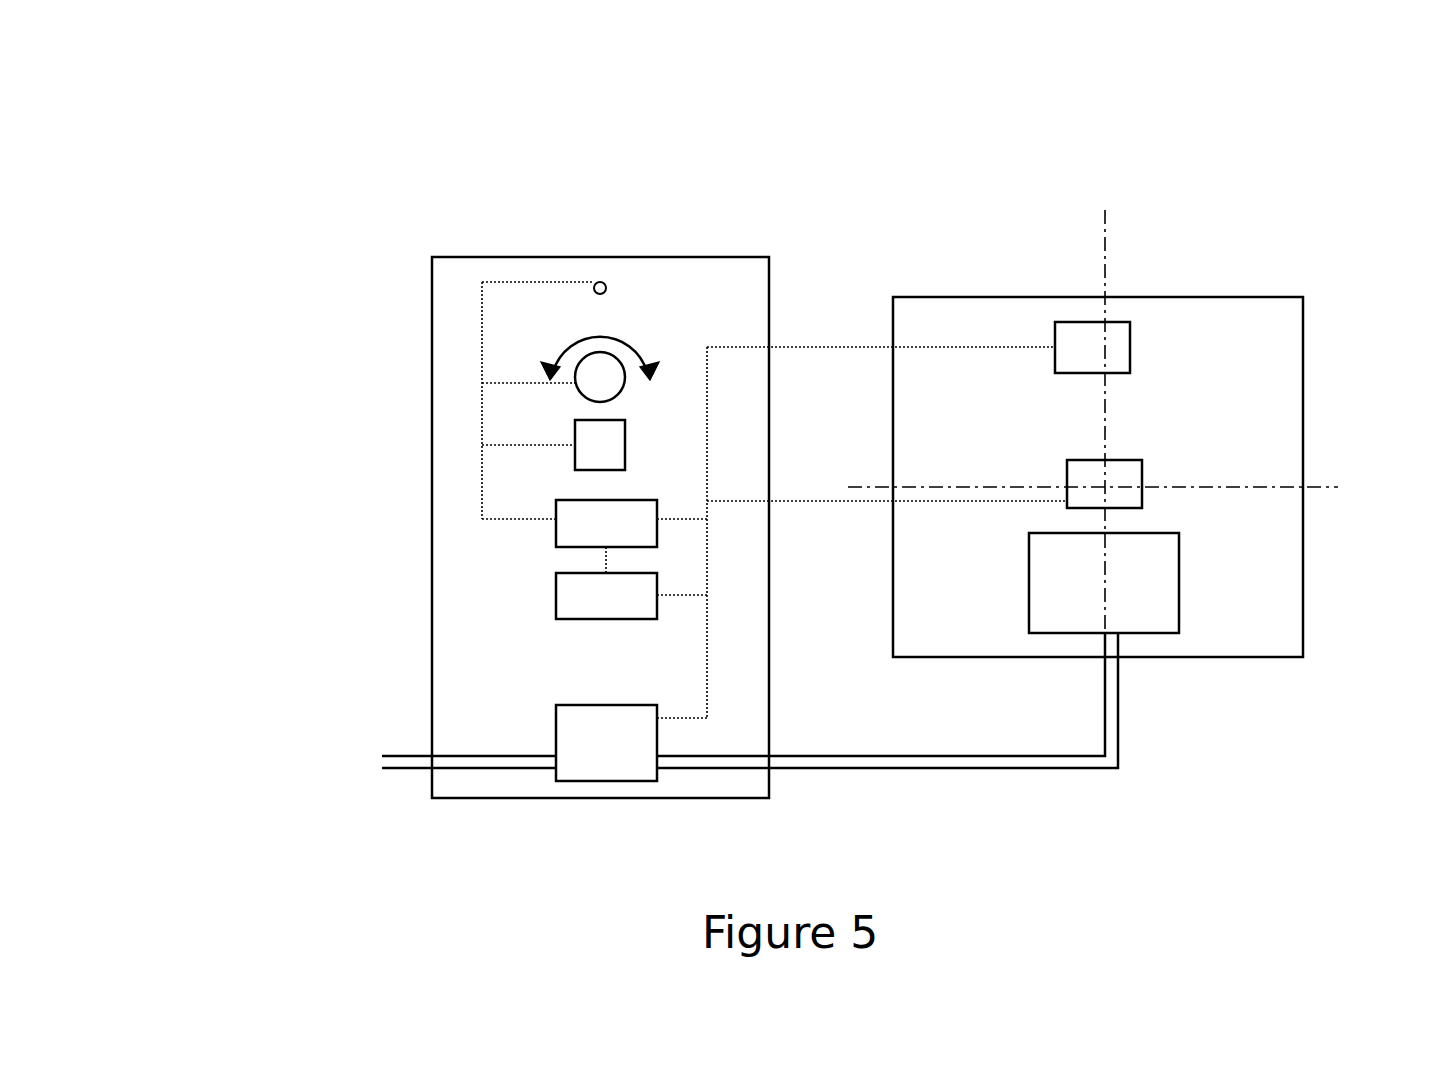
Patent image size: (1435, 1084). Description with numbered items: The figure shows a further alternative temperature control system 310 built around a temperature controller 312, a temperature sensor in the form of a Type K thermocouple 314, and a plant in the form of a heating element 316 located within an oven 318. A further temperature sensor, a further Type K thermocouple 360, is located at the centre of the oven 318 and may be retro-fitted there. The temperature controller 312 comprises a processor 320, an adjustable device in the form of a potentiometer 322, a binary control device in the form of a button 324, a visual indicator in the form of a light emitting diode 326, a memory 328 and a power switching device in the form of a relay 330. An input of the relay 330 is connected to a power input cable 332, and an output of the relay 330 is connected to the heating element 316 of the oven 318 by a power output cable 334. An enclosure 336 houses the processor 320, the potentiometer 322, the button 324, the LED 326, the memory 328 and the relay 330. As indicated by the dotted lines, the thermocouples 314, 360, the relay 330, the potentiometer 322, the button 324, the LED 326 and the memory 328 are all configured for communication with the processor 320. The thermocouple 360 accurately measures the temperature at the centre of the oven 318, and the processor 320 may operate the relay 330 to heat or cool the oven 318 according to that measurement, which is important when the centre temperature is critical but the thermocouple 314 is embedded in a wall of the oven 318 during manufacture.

The temperature control system 310 is at (872, 142).
The temperature controller 312 is at (232, 757).
The Type K thermocouple 314 is at (1118, 335).
The heating element 316 is at (1152, 618).
The oven 318 is at (1303, 333).
The processor 320 is at (578, 535).
The potentiometer 322 is at (602, 388).
The button 324 is at (588, 452).
The light emitting diode (LED) 326 is at (601, 282).
The memory 328 is at (577, 590).
The relay 330 is at (605, 752).
The power input cable 332 is at (360, 765).
The power output cable 334 is at (990, 780).
The enclosure 336 is at (463, 803).
The further Type K thermocouple 360 is at (1142, 472).